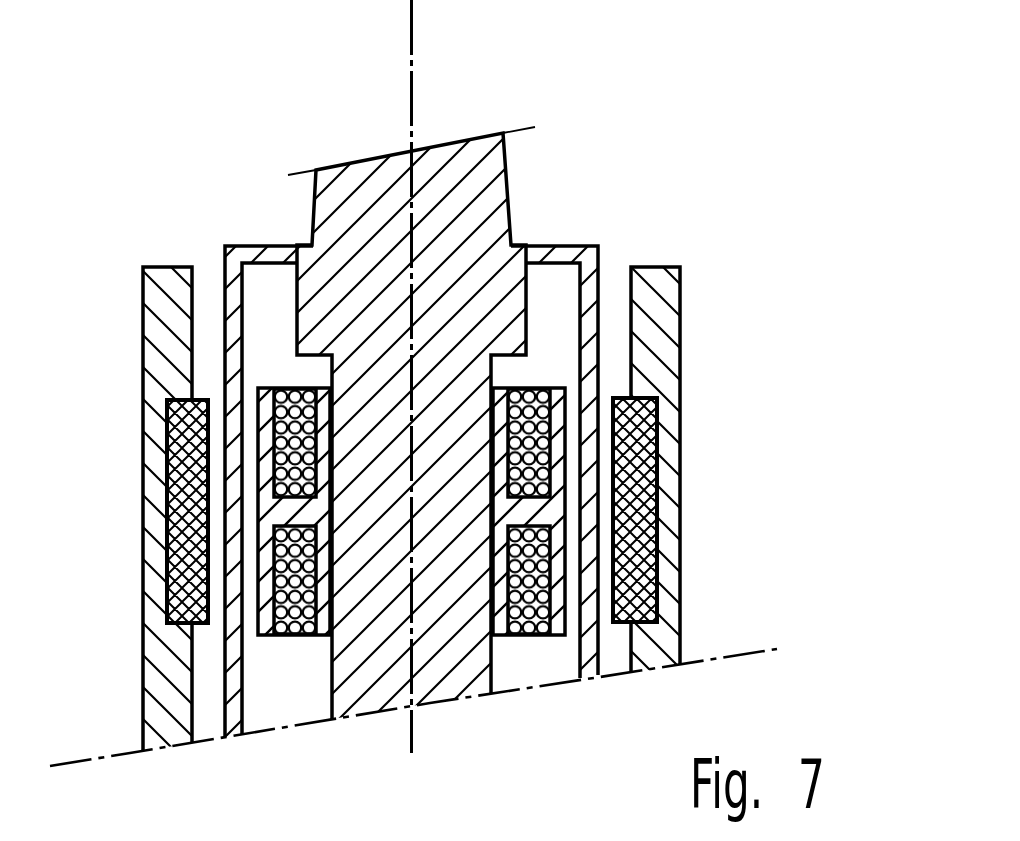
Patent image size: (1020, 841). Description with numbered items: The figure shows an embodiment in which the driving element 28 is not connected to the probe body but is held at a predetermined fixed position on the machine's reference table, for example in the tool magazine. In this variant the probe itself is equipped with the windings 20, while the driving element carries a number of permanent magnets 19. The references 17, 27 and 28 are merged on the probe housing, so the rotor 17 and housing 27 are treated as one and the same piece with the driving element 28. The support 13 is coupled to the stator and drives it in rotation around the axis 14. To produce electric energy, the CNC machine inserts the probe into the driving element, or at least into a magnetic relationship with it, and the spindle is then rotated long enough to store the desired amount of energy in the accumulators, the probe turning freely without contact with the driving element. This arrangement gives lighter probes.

The axis 14 is at (412, 65).
The support 13 is at (478, 180).
The housing 27 is at (660, 307).
The rotor 17 is at (411, 491).
The driving element 28 is at (167, 509).
The permanent magnets 19 is at (658, 440).
The windings 20 is at (533, 543).